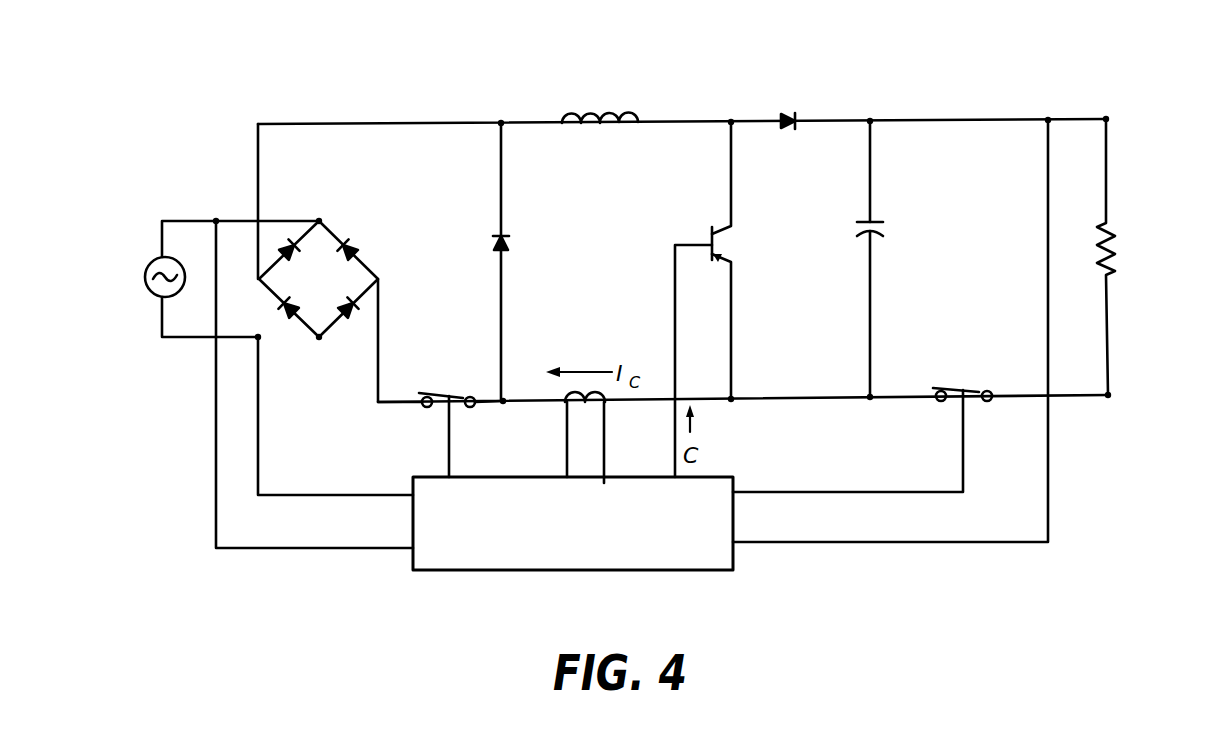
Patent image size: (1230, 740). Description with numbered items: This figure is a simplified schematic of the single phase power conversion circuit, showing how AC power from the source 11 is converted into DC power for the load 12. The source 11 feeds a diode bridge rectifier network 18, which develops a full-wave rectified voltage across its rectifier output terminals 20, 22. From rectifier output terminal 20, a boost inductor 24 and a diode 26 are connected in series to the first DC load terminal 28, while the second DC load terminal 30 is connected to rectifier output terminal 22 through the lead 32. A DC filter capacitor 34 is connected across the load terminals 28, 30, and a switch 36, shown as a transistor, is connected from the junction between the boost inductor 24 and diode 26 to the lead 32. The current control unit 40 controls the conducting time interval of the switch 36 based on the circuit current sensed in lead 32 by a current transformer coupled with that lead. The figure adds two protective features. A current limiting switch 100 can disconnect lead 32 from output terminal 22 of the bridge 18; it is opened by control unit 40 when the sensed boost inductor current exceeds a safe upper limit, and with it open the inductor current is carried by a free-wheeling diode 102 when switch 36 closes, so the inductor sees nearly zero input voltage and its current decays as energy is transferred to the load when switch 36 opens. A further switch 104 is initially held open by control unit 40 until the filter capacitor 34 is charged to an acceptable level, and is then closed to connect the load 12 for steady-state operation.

The source 11 is at (151, 292).
The diode bridge rectifier network 18 is at (332, 284).
The rectifier output terminal 20 is at (259, 282).
The rectifier output terminal 22 is at (381, 278).
The boost inductor 24 is at (617, 115).
The diode 26 is at (793, 113).
The first DC load terminal 28 is at (1106, 119).
The second DC load terminal 30 is at (1108, 396).
The load 12 is at (1118, 252).
The DC filter capacitor 34 is at (882, 221).
The switch 36 is at (722, 232).
The current limiting switch 100 is at (440, 392).
The free-wheeling diode 102 is at (510, 241).
The switch 104 is at (953, 387).
The lead 32 is at (540, 402).
The current control unit 40 is at (553, 550).